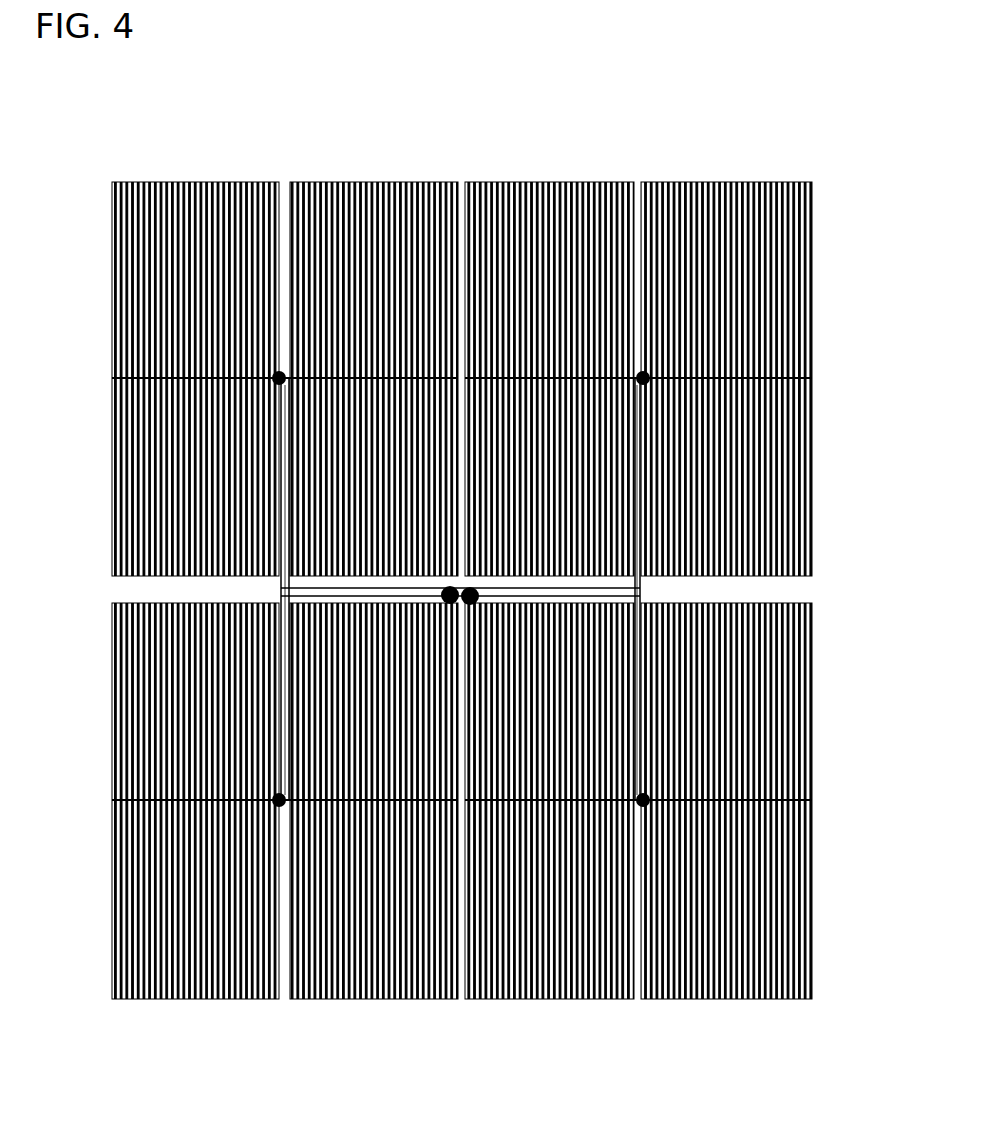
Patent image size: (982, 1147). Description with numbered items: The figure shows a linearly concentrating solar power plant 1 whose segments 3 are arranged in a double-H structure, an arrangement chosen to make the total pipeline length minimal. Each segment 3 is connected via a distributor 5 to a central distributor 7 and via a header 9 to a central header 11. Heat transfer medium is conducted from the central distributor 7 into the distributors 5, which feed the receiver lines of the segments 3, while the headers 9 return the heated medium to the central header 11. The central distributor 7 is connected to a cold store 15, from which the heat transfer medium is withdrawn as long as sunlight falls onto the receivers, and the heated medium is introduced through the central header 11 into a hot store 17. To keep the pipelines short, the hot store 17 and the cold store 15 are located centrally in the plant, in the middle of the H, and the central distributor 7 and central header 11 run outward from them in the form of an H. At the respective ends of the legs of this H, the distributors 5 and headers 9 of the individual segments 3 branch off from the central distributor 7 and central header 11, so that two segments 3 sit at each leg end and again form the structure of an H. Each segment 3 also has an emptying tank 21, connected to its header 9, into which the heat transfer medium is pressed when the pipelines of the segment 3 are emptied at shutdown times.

The linearly concentrating solar power plant 1 is at (832, 414).
The segment 3 is at (206, 181).
The distributor 5 is at (578, 594).
The header 9 is at (362, 340).
The central distributor 7 is at (268, 412).
The central header 11 is at (278, 455).
The cold store 15 is at (282, 600).
The hot store 17 is at (478, 600).
The emptying tank 21 is at (275, 376).